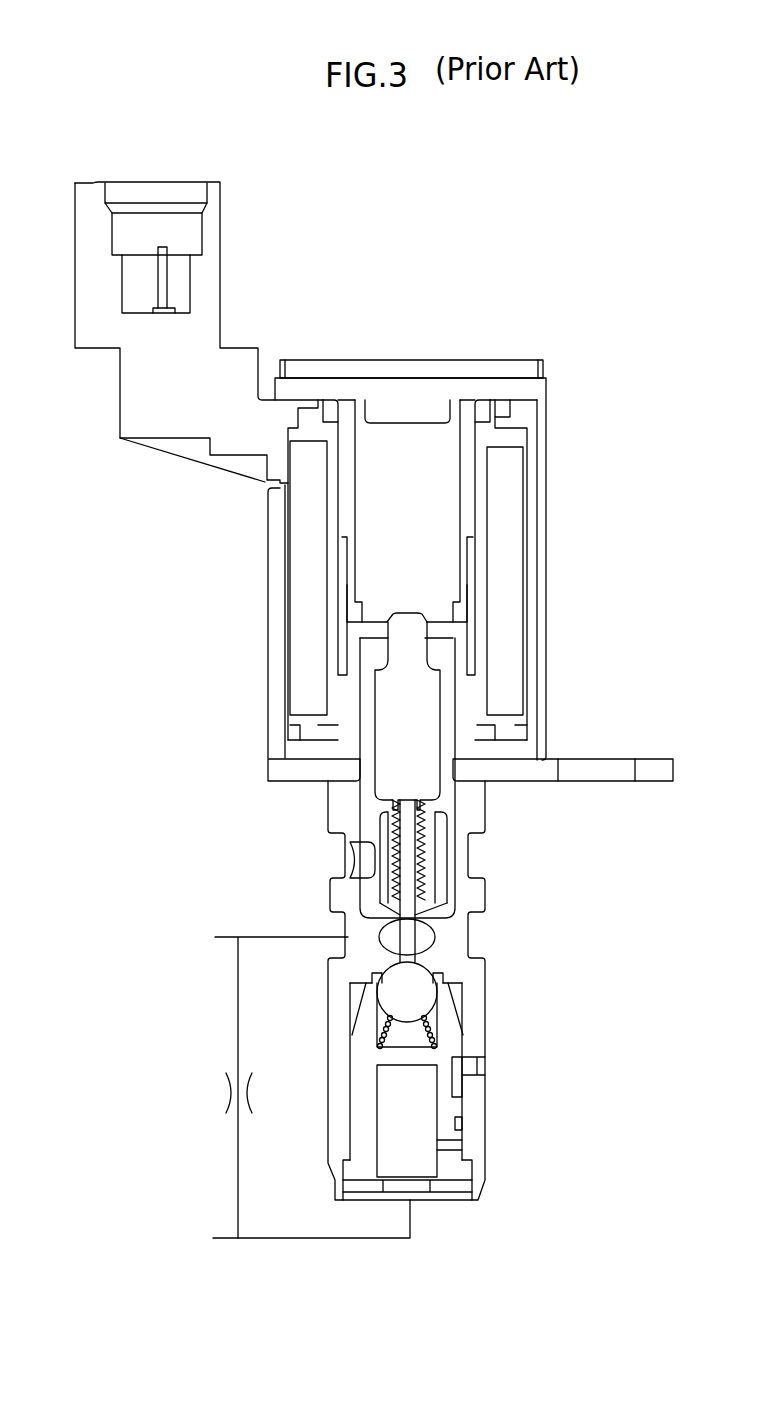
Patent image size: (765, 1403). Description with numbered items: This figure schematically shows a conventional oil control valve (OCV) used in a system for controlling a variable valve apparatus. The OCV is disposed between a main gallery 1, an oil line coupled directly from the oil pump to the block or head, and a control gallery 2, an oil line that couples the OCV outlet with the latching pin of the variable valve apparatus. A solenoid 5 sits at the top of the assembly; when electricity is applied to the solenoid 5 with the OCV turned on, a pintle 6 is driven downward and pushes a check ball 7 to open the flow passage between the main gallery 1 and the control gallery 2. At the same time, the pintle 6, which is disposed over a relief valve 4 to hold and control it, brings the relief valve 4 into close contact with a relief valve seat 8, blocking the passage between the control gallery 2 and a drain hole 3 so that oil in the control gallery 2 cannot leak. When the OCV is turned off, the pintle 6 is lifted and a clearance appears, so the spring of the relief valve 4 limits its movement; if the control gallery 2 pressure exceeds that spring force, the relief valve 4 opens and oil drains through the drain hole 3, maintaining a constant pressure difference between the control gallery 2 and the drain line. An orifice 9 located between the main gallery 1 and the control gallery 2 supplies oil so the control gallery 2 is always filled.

The main gallery 1 is at (228, 1237).
The control gallery 2 is at (228, 935).
The drain hole 3 is at (345, 852).
The relief valve 4 is at (418, 861).
The solenoid 5 is at (300, 577).
The pintle 6 is at (398, 705).
The check ball 7 is at (407, 992).
The relief valve seat 8 is at (378, 912).
The orifice 9 is at (231, 1093).